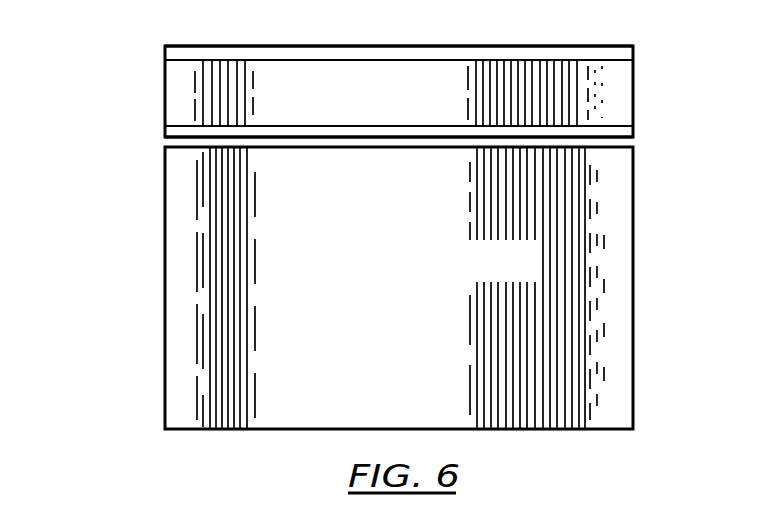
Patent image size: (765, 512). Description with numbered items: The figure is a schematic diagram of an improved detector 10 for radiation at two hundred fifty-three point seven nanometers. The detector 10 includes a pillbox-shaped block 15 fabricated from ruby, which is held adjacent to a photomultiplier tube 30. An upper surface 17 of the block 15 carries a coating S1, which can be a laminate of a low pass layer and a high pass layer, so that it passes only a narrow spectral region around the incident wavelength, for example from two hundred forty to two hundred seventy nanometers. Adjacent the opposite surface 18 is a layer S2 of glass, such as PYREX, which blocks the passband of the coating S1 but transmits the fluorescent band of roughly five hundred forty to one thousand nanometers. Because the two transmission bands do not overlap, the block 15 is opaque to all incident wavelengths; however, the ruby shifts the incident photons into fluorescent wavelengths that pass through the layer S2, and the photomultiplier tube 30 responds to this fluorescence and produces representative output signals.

The improved detector 10 is at (100, 172).
The pillbox-shaped block 15 is at (165, 92).
The upper surface 17 is at (210, 60).
The surface 18 is at (184, 127).
The photomultiplier tube 30 is at (165, 240).
The coating S1 is at (617, 46).
The layer S2 is at (623, 128).